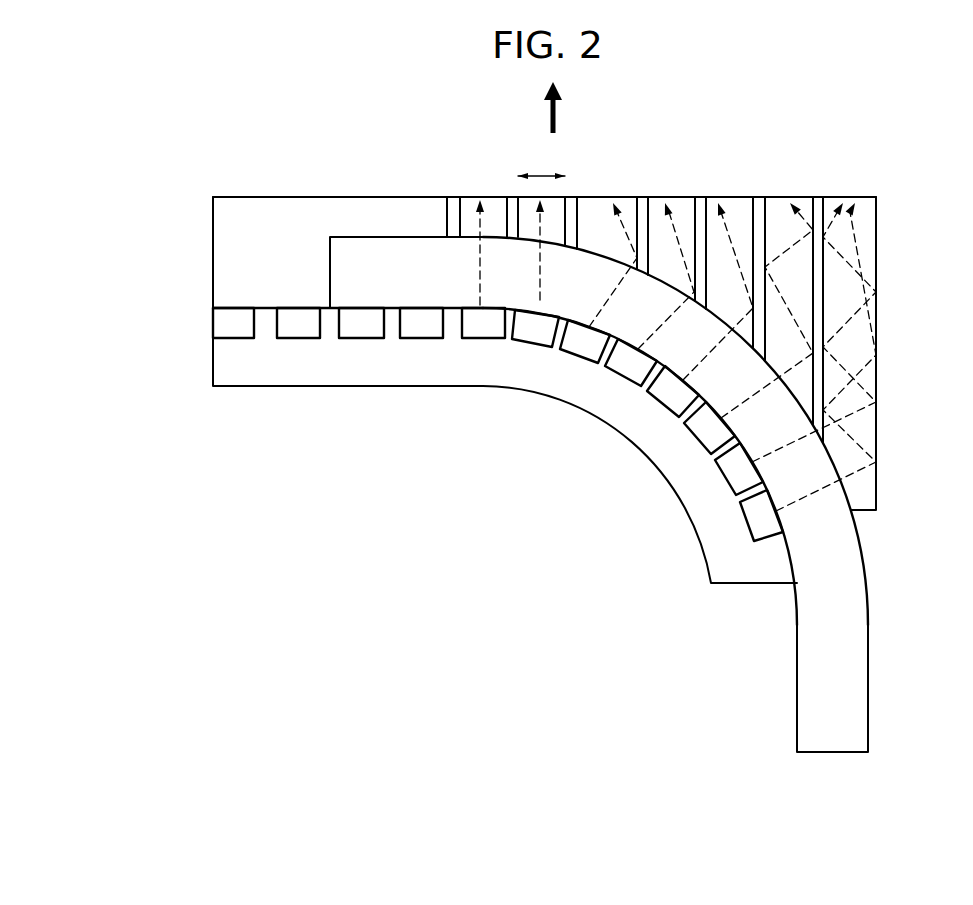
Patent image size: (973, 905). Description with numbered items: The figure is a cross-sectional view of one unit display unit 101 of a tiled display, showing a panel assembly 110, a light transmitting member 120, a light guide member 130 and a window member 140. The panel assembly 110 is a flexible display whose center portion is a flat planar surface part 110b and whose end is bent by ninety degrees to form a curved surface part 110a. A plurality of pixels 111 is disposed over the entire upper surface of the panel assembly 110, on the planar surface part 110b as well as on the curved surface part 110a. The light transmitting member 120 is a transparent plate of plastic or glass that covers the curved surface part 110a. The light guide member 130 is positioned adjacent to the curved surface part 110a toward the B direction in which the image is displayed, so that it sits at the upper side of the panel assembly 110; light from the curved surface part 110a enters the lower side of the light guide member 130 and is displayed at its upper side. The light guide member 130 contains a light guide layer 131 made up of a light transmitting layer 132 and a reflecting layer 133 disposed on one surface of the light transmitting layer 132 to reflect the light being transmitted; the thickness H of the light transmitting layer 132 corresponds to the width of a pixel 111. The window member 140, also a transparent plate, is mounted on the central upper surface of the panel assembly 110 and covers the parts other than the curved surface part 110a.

The unit display unit 101 is at (206, 132).
The panel assembly 110 is at (240, 358).
The curved surface part 110a is at (493, 389).
The planar surface part 110b is at (487, 417).
The pixel 111 is at (470, 322).
The light transmitting member 120 is at (812, 722).
The light guide member 130 is at (890, 352).
The light guide layer 131 is at (793, 142).
The light transmitting layer 132 is at (736, 226).
The reflecting layer 133 is at (771, 226).
The window member 140 is at (270, 228).